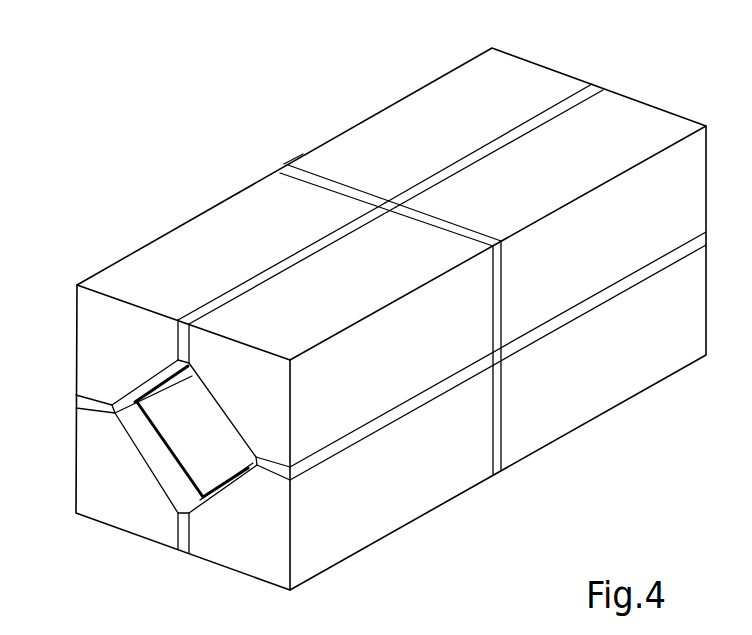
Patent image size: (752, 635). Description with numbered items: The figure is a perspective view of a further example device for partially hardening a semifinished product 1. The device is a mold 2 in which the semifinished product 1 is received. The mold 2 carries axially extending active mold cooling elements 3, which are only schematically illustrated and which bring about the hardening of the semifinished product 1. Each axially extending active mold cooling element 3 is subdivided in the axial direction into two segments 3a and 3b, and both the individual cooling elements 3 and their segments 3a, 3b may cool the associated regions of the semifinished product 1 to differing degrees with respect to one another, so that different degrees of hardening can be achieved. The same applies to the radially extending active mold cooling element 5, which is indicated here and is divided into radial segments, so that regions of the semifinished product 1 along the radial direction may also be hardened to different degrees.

The semifinished product 1 is at (202, 445).
The mold 2 is at (201, 151).
The active mold cooling elements 3 is at (227, 295).
The segment 3a is at (285, 263).
The segment 3b is at (473, 160).
The radially extending active mold cooling element 5 is at (315, 180).